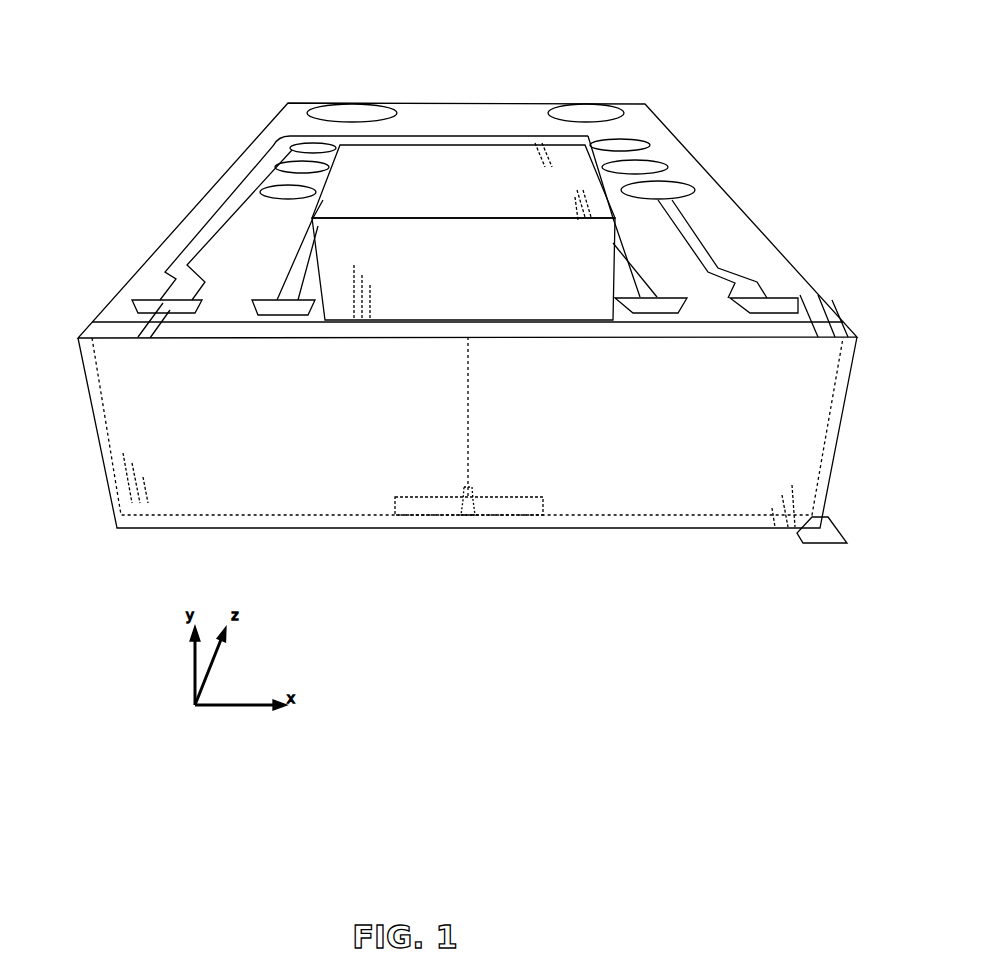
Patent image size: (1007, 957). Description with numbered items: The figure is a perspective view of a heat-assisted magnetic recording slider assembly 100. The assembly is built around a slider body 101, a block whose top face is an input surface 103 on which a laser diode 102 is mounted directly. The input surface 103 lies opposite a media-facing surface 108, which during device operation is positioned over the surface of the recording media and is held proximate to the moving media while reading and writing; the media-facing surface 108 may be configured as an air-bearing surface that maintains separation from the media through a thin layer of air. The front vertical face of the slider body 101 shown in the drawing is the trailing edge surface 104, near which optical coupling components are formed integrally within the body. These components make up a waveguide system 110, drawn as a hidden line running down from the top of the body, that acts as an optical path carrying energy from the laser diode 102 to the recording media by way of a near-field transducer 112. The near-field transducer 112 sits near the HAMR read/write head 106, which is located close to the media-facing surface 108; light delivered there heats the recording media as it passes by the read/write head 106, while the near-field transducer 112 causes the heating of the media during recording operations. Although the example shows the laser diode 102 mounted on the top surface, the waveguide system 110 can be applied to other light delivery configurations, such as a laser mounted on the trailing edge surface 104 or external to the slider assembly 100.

The HAMR slider assembly 100 is at (443, 335).
The slider body 101 is at (443, 357).
The laser diode 102 is at (463, 175).
The input surface 103 is at (145, 282).
The trailing edge surface 104 is at (178, 503).
The read/write head 106 is at (503, 481).
The media-facing surface 108 is at (837, 545).
The waveguide system 110 is at (468, 410).
The near-field transducer 112 is at (470, 517).